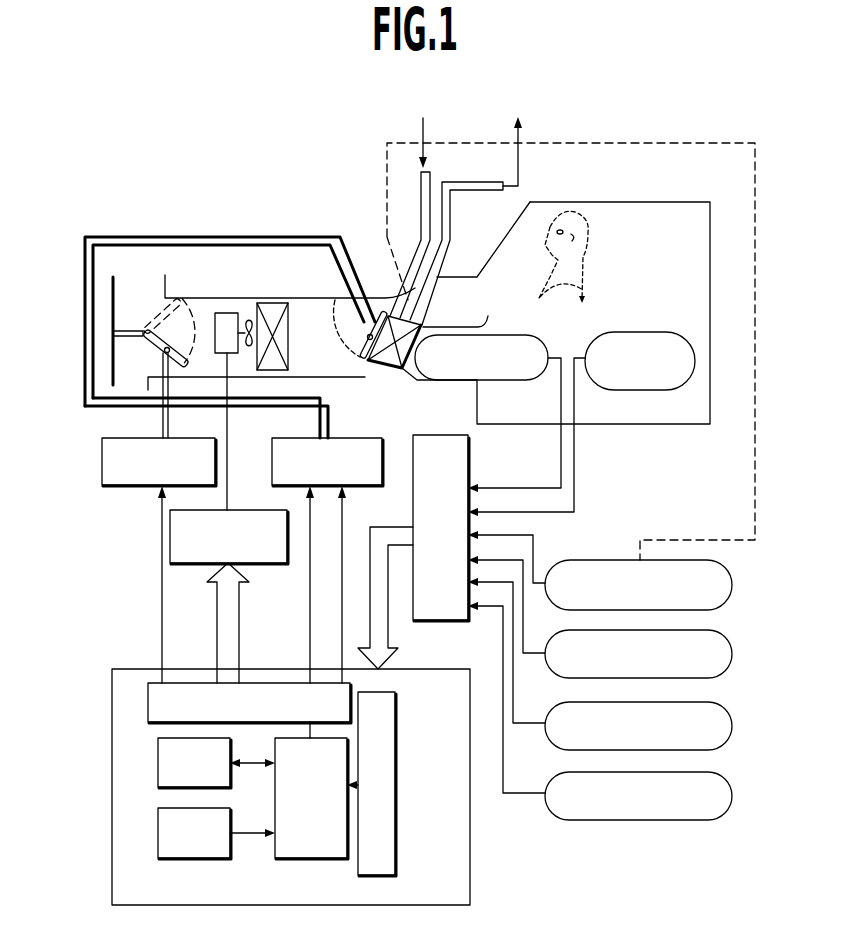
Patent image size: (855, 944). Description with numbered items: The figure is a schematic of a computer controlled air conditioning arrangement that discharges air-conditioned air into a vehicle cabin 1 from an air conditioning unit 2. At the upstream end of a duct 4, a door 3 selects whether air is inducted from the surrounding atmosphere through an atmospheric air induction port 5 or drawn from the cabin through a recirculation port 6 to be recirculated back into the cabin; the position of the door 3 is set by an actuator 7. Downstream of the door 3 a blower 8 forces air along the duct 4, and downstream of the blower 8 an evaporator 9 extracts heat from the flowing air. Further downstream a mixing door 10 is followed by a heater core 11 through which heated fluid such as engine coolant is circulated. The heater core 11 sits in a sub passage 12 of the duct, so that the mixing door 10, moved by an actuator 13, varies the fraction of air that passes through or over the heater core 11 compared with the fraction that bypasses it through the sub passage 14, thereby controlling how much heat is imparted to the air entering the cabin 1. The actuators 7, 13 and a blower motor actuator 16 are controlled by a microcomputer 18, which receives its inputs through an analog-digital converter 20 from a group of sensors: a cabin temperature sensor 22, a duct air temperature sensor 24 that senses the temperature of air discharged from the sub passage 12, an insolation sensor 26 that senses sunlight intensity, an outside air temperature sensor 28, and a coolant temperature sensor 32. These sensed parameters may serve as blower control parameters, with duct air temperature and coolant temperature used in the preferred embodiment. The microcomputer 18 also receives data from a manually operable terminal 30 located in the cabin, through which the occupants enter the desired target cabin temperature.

The vehicle cabin 1 is at (707, 230).
The air conditioning unit 2 is at (96, 446).
The door 3 is at (160, 347).
The duct 4 is at (202, 298).
The atmospheric air induction port 5 is at (142, 267).
The recirculation port 6 is at (138, 387).
The actuator 7 is at (132, 487).
The blower 8 is at (228, 313).
The evaporator 9 is at (273, 308).
The mixing door 10 is at (363, 363).
The heater core 11 is at (420, 318).
The sub passage 12 is at (458, 332).
The actuator 13 is at (355, 437).
The sub passage 14 is at (468, 283).
The blower motor actuator 16 is at (248, 508).
The microcomputer 18 is at (470, 886).
The analog-digital converter 20 is at (412, 498).
The cabin temperature sensor 22 is at (667, 332).
The duct air temperature sensor 24 is at (525, 380).
The insolation sensor 26 is at (705, 750).
The outside air temperature sensor 28 is at (705, 678).
The manually operable terminal 30 is at (705, 820).
The coolant temperature sensor 32 is at (705, 610).